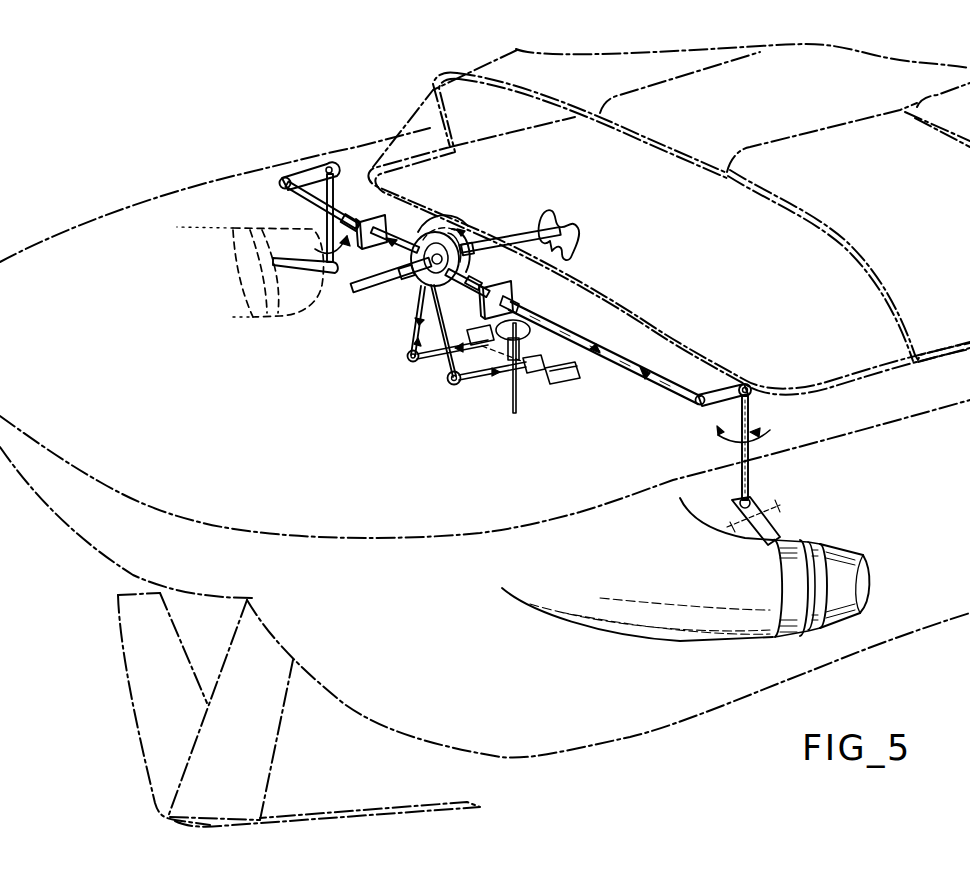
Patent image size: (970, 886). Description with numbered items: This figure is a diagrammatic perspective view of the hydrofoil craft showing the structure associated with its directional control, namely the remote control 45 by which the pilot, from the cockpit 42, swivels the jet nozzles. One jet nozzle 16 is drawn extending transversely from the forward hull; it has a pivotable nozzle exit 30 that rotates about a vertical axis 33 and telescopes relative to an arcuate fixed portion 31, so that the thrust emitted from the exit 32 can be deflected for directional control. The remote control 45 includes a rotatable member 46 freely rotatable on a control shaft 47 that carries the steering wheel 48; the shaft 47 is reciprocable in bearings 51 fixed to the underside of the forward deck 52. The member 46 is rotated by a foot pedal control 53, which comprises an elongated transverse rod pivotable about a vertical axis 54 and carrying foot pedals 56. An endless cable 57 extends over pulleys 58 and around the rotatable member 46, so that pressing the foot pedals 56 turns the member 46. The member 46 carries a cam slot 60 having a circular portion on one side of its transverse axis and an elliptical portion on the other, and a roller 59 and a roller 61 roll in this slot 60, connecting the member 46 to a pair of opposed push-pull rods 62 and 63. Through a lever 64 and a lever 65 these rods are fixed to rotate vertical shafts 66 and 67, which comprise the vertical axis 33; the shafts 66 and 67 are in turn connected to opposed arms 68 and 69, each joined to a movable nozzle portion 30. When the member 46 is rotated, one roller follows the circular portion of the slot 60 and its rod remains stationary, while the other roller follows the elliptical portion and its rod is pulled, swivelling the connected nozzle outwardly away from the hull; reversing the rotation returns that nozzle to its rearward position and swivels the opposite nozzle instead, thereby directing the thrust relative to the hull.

The jet nozzle 16 is at (700, 590).
The nozzle exit 30 is at (837, 623).
The arcuate fixed portion 31 is at (713, 637).
The exit 32 is at (858, 570).
The vertical axis 33 is at (762, 433).
The cockpit 42 is at (533, 173).
The remote control 45 is at (339, 302).
The rotatable member 46 is at (422, 232).
The control shaft 47 is at (487, 238).
The steering wheel 48 is at (593, 238).
The bearings 51 is at (410, 279).
The forward deck 52 is at (331, 480).
The foot pedal control 53 is at (547, 381).
The vertical axis 54 is at (513, 389).
The foot pedals 56 is at (513, 302).
The endless cable 57 is at (470, 379).
The pulleys 58 is at (447, 373).
The roller 59 is at (471, 286).
The cam slot 60 is at (453, 234).
The roller 61 is at (377, 237).
The push-pull rod 62 is at (598, 347).
The push-pull rod 63 is at (336, 207).
The lever 64 is at (738, 388).
The lever 65 is at (307, 172).
The vertical shaft 66 is at (750, 409).
The vertical shaft 67 is at (335, 171).
The arm 68 is at (774, 523).
The arm 69 is at (325, 280).